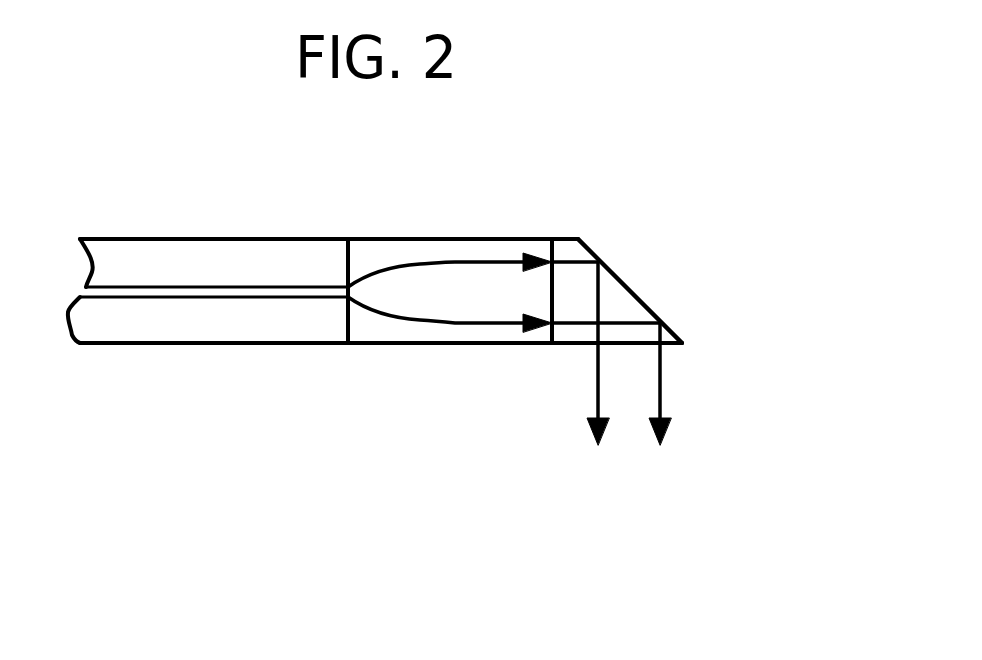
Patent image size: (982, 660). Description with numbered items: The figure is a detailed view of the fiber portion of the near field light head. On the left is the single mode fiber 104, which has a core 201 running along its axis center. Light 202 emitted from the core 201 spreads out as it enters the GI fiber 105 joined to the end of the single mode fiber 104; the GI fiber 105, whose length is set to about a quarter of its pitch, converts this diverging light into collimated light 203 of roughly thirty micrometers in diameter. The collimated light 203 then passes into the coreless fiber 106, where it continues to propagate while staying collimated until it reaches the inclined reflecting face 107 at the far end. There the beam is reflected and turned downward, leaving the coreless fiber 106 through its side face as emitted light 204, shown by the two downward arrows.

The single mode fiber 104 is at (167, 322).
The core 201 is at (228, 292).
The GI fiber 105 is at (398, 325).
The light 202 is at (473, 320).
The coreless fiber 106 is at (575, 332).
The reflecting face 107 is at (626, 287).
The collimated light 203 is at (570, 323).
The emitted light 204 is at (600, 365).